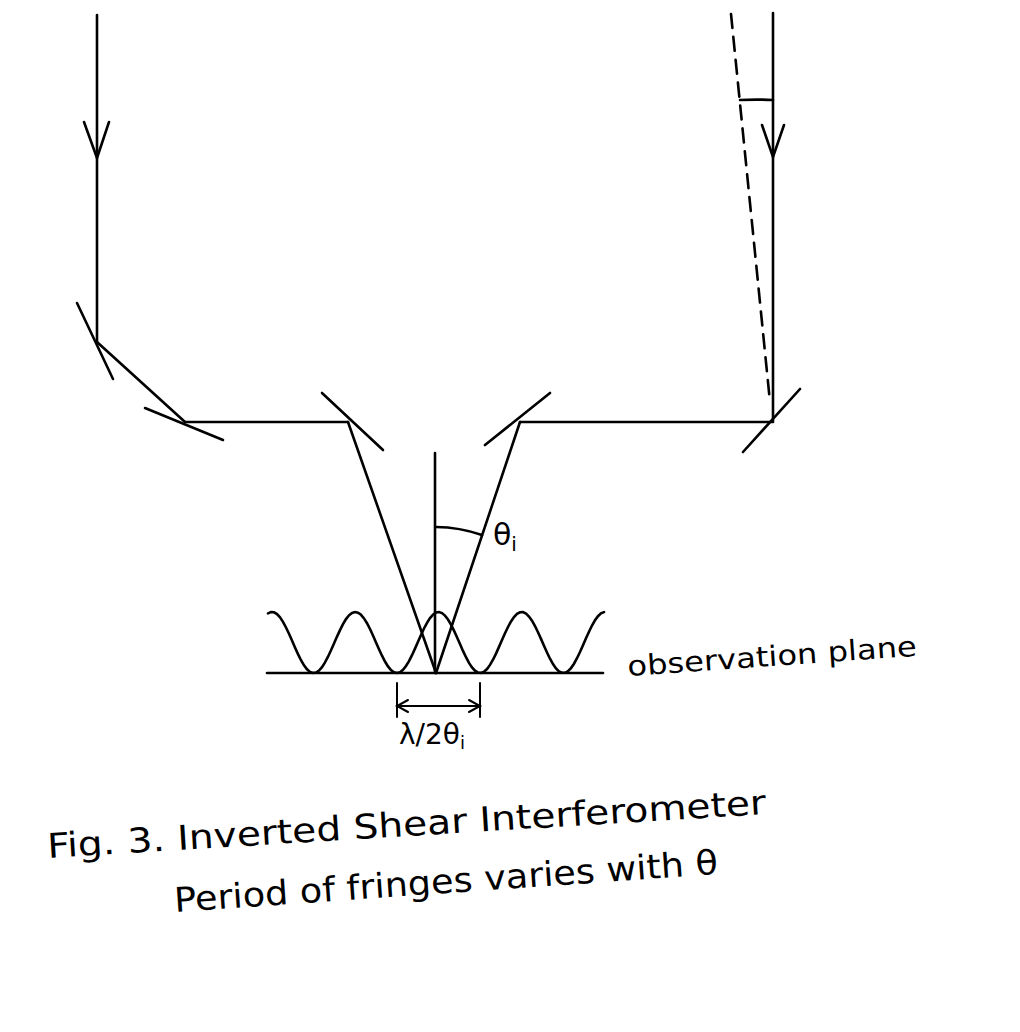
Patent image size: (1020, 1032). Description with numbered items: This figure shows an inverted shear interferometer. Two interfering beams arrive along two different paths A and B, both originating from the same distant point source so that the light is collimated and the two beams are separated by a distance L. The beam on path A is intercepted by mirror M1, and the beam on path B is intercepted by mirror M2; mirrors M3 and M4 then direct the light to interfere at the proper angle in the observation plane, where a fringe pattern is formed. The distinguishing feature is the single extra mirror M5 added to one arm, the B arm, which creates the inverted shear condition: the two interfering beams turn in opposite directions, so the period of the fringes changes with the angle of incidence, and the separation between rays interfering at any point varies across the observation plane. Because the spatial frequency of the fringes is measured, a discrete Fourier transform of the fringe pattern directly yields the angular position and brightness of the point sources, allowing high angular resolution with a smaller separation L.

The incident beam path A is at (776, 217).
The incident beam path B is at (81, 178).
The mirror M1 is at (789, 422).
The mirror M2 is at (177, 442).
The mirror M3 is at (544, 397).
The mirror M4 is at (349, 400).
The added mirror M5 is at (70, 340).